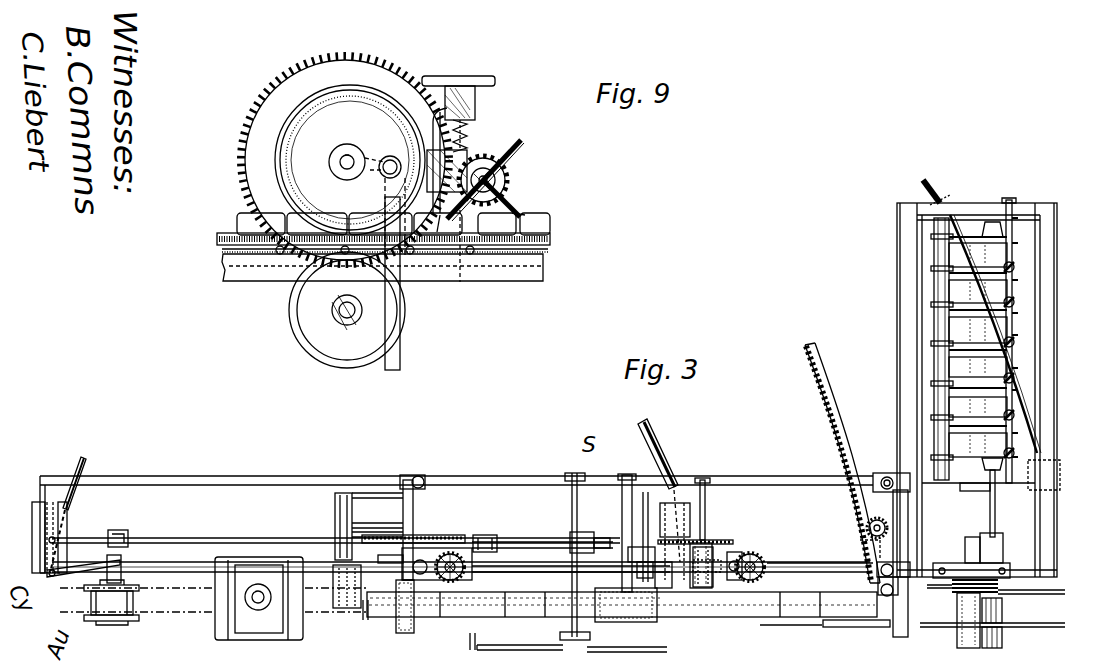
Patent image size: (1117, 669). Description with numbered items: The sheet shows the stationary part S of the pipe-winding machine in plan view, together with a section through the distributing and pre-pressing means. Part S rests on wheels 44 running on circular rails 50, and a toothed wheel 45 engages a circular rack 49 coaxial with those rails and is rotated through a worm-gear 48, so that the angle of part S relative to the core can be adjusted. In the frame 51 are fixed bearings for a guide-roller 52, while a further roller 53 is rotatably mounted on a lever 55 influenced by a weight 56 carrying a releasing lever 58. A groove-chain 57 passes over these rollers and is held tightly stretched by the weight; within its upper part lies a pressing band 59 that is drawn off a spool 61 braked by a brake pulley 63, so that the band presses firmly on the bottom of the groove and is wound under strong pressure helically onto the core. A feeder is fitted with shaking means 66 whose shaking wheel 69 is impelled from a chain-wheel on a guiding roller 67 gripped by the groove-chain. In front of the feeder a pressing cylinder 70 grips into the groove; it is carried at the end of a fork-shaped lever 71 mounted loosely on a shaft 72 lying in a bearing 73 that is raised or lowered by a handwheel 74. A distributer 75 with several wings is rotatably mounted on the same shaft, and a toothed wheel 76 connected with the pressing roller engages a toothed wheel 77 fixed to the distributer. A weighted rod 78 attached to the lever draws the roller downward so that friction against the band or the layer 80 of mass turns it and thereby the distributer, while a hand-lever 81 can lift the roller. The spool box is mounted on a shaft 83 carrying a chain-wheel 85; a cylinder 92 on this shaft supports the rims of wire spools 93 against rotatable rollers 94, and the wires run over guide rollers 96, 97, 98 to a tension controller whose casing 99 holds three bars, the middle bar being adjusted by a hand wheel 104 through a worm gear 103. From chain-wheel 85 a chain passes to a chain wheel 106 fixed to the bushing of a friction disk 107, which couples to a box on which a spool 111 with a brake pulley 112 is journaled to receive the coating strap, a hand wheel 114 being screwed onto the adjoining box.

In FIG. 3, the wheels 44 is at (70, 505).
In FIG. 3, the toothed wheel 45 is at (864, 544).
In FIG. 3, the worm-gear 48 is at (866, 516).
In FIG. 3, the circular rack 49 is at (856, 498).
In FIG. 3, the circular rails 50 is at (86, 462).
In FIG. 3, the frame 51 is at (190, 562).
In FIG. 3, the guide-roller 52 is at (825, 627).
In FIG. 3, the roller 53 is at (104, 626).
In FIG. 3, the lever 55 is at (112, 533).
In FIG. 3, the weight 56 is at (480, 552).
In FIG. 9, the groove-chain 57 is at (290, 246).
In FIG. 3, the groove-chain 57 is at (88, 608).
In FIG. 3, the releasing lever 58 is at (532, 630).
In FIG. 9, the pressing band 59 is at (545, 246).
In FIG. 3, the spool 61 is at (1041, 598).
In FIG. 3, the brake pulley 63 is at (1004, 638).
In FIG. 3, the shaking means 66 is at (626, 605).
In FIG. 9, the guiding roller 67 is at (408, 306).
In FIG. 3, the guiding roller 67 is at (385, 587).
In FIG. 3, the shaking wheel 69 is at (640, 546).
In FIG. 9, the pressing cylinder 70 is at (300, 126).
In FIG. 3, the pressing cylinder 70 is at (708, 588).
In FIG. 9, the fork-shaped lever 71 is at (470, 176).
In FIG. 3, the fork-shaped lever 71 is at (440, 553).
In FIG. 9, the shaft 72 is at (495, 270).
In FIG. 9, the bearing 73 is at (483, 172).
In FIG. 9, the handwheel 74 is at (497, 80).
In FIG. 3, the handwheel 74 is at (488, 542).
In FIG. 9, the distributer 75 is at (516, 212).
In FIG. 3, the distributer 75 is at (480, 590).
In FIG. 9, the toothed wheel 76 is at (322, 68).
In FIG. 3, the toothed wheel 76 is at (450, 532).
In FIG. 9, the toothed wheel 77 is at (505, 160).
In FIG. 3, the toothed wheel 77 is at (435, 548).
In FIG. 9, the rod 78 is at (382, 198).
In FIG. 3, the rod 78 is at (408, 478).
In FIG. 9, the layer of mass 80 is at (262, 236).
In FIG. 3, the hand-lever 81 is at (569, 638).
In FIG. 3, the shaft 83 is at (996, 515).
In FIG. 3, the chain-wheel 85 is at (1004, 570).
In FIG. 3, the cylinder 92 is at (932, 432).
In FIG. 3, the wire spools 93 is at (1016, 247).
In FIG. 3, the rotatable rollers 94 is at (934, 250).
In FIG. 3, the guide roller 96 is at (1014, 268).
In FIG. 3, the guide roller 97 is at (888, 615).
In FIG. 3, the guide roller 98 is at (407, 635).
In FIG. 3, the casing 99 is at (335, 578).
In FIG. 3, the worm gear 103 is at (340, 612).
In FIG. 3, the hand wheel 104 is at (366, 622).
In FIG. 3, the chain wheel 106 is at (1000, 586).
In FIG. 3, the friction disk 107 is at (1013, 623).
In FIG. 3, the spool 111 is at (1004, 612).
In FIG. 3, the brake pulley 112 is at (958, 640).
In FIG. 3, the hand wheel 114 is at (955, 570).